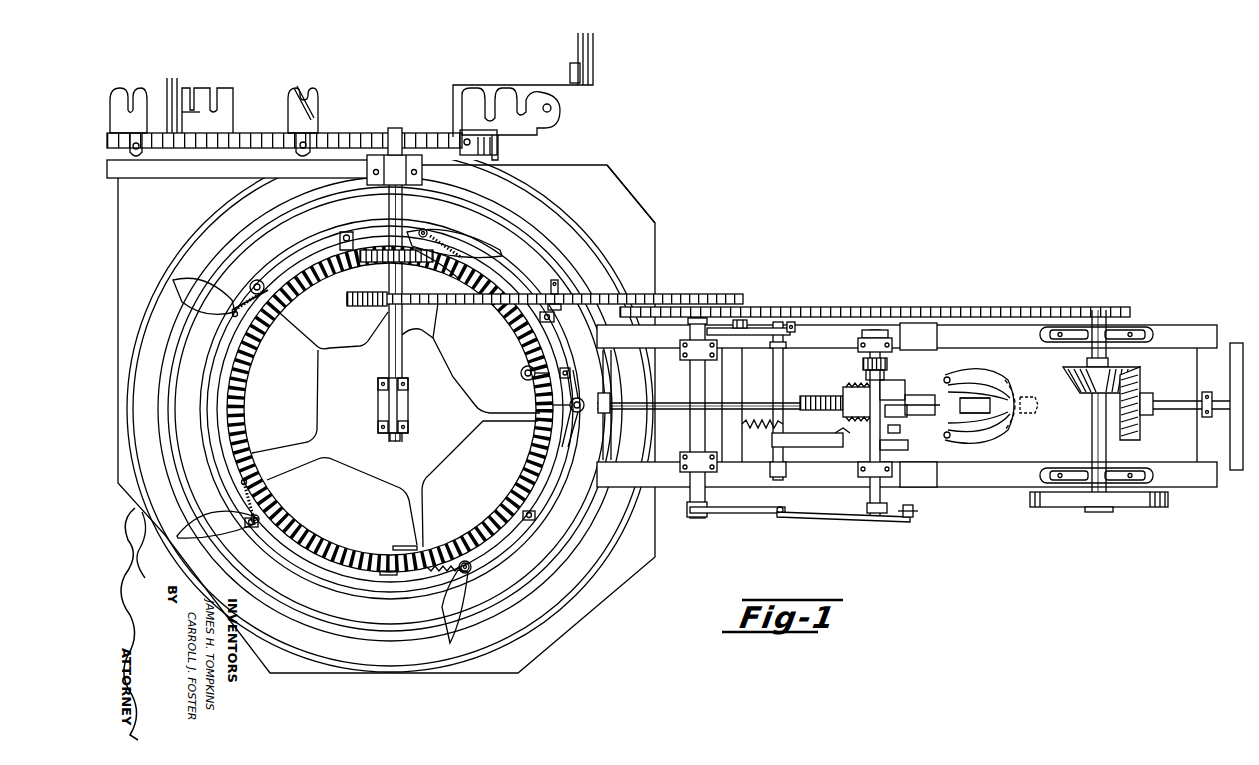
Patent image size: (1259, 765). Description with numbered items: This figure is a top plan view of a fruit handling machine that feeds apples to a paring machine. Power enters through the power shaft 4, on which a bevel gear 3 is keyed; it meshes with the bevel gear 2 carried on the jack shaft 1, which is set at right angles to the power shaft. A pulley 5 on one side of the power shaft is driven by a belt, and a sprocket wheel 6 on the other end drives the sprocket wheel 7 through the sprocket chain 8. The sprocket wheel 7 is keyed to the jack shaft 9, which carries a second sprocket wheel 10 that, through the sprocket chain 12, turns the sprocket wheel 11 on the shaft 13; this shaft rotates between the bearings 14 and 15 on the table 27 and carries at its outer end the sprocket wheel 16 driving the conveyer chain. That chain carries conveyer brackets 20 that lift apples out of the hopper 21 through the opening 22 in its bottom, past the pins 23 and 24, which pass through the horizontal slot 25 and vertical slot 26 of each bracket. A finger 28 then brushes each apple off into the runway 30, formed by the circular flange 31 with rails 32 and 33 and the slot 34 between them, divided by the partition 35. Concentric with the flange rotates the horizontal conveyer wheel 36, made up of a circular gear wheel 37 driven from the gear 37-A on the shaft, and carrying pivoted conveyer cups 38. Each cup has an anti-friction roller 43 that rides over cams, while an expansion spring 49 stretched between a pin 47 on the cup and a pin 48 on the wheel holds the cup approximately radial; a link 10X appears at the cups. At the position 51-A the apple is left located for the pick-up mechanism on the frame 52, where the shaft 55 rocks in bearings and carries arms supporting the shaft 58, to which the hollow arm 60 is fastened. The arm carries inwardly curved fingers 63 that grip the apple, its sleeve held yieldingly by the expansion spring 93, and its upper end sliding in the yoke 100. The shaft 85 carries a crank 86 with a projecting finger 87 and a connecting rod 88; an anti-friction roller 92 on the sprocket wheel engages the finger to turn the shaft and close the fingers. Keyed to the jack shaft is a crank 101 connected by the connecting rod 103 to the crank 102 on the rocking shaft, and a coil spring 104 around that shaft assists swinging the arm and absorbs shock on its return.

The jack shaft 1 is at (1188, 402).
The bevel gear 2 is at (1140, 420).
The bevel gear 3 is at (1082, 384).
The power shaft 4 is at (1092, 448).
The pulley 5 is at (1118, 508).
The sprocket wheel 6 is at (875, 299).
The sprocket wheel 7 is at (875, 302).
The sprocket chain 8 is at (868, 307).
The jack shaft 9 is at (690, 378).
The sprocket wheel 10 is at (544, 291).
The pawl link 10X is at (290, 268).
The sprocket wheel 11 is at (370, 307).
The sprocket chain 12 is at (544, 291).
The shaft 13 is at (389, 354).
The bearing 14 is at (406, 384).
The bearing 15 is at (420, 176).
The sprocket wheel 16 is at (410, 135).
The conveyer bracket 20 is at (540, 118).
The hopper 21 is at (594, 68).
The opening 22 is at (215, 91).
The pin 23 is at (215, 93).
The pin 24 is at (191, 108).
The horizontal slot 25 is at (128, 111).
The vertical slot 26 is at (296, 121).
The table 27 is at (618, 195).
The finger 28 is at (314, 110).
The runway 30 is at (232, 214).
The circular flange 31 is at (160, 296).
The rail 32 is at (322, 640).
The rail 33 is at (347, 603).
The slot 34 is at (580, 530).
The partition 35 is at (547, 567).
The horizontal conveyer wheel 36 is at (375, 455).
The circular gear wheel 37 is at (296, 522).
The gear 37-A is at (385, 263).
The conveyer cup 38 is at (200, 286).
The anti-friction roller 43 is at (522, 377).
The pin 47 is at (470, 570).
The pin 48 is at (426, 589).
The expansion spring 49 is at (436, 574).
The position 51-A is at (600, 420).
The frame 52 is at (915, 514).
The shaft 55 is at (862, 364).
The shaft 58 is at (898, 383).
The hollow arm 60 is at (672, 410).
The finger 63 is at (980, 372).
The shaft 85 is at (782, 380).
The crank 86 is at (795, 323).
The finger 87 is at (750, 322).
The connecting rod 88 is at (762, 334).
The anti-friction roller 92 is at (672, 318).
The expansion spring 93 is at (815, 411).
The yoke 100 is at (600, 393).
The crank 101 is at (735, 514).
The crank 102 is at (931, 514).
The connecting rod 103 is at (843, 519).
The coil spring 104 is at (858, 386).